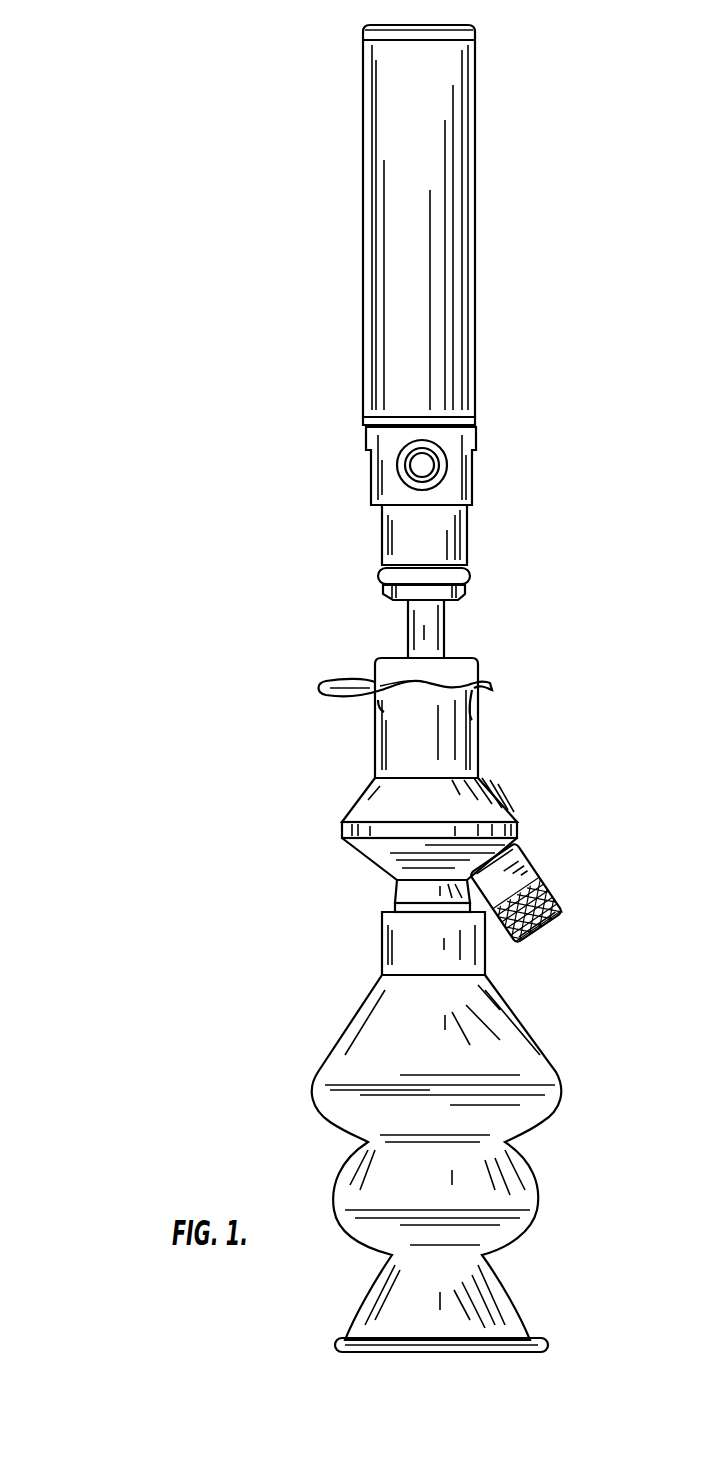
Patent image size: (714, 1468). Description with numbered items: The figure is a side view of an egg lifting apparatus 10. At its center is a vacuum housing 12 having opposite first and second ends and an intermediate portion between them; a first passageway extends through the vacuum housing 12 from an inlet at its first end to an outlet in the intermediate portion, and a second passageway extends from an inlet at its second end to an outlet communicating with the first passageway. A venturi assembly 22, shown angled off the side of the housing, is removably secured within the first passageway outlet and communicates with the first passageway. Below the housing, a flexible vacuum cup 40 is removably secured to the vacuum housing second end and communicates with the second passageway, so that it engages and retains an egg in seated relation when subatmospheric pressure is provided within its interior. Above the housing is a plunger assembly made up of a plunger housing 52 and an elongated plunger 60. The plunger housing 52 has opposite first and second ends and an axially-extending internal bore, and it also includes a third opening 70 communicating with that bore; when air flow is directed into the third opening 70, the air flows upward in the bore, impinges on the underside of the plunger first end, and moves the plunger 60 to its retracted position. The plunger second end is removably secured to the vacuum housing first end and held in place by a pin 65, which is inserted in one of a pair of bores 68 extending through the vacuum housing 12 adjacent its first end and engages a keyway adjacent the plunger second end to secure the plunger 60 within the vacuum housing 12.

The egg lifting apparatus 10 is at (118, 462).
The plunger housing 52 is at (372, 298).
The third opening 70 is at (442, 473).
The elongated plunger 60 is at (435, 632).
The vacuum housing 12 is at (378, 755).
The pin 65 is at (347, 675).
The bores 68 is at (380, 700).
The venturi assembly 22 is at (548, 893).
The flexible vacuum cup 40 is at (320, 1065).